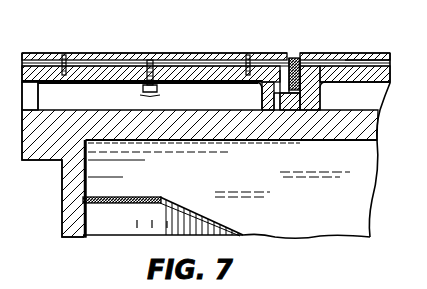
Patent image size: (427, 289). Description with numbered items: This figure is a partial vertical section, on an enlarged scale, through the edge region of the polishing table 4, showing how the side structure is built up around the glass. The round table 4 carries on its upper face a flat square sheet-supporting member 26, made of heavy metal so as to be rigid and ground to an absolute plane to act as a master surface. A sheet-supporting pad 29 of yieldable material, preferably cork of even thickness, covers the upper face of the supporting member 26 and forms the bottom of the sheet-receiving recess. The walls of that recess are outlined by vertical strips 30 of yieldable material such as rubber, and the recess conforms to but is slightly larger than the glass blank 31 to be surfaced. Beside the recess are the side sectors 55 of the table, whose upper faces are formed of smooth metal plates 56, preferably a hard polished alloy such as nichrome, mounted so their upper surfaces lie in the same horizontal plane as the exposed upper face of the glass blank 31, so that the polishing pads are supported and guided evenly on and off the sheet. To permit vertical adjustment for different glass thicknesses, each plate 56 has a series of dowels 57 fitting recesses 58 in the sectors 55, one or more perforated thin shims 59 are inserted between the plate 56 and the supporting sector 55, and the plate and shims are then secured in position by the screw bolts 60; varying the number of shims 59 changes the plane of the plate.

The table 4 is at (67, 155).
The sheet-supporting member 26 is at (315, 100).
The sheet-supporting pad 29 is at (322, 56).
The vertical strips 30 is at (292, 57).
The glass blank 31 is at (356, 56).
The side sectors 55 is at (28, 98).
The metal plates 56 is at (135, 49).
The dowels 57 is at (70, 48).
The recesses 58 is at (64, 74).
The shims 59 is at (189, 61).
The screw bolts 60 is at (150, 86).